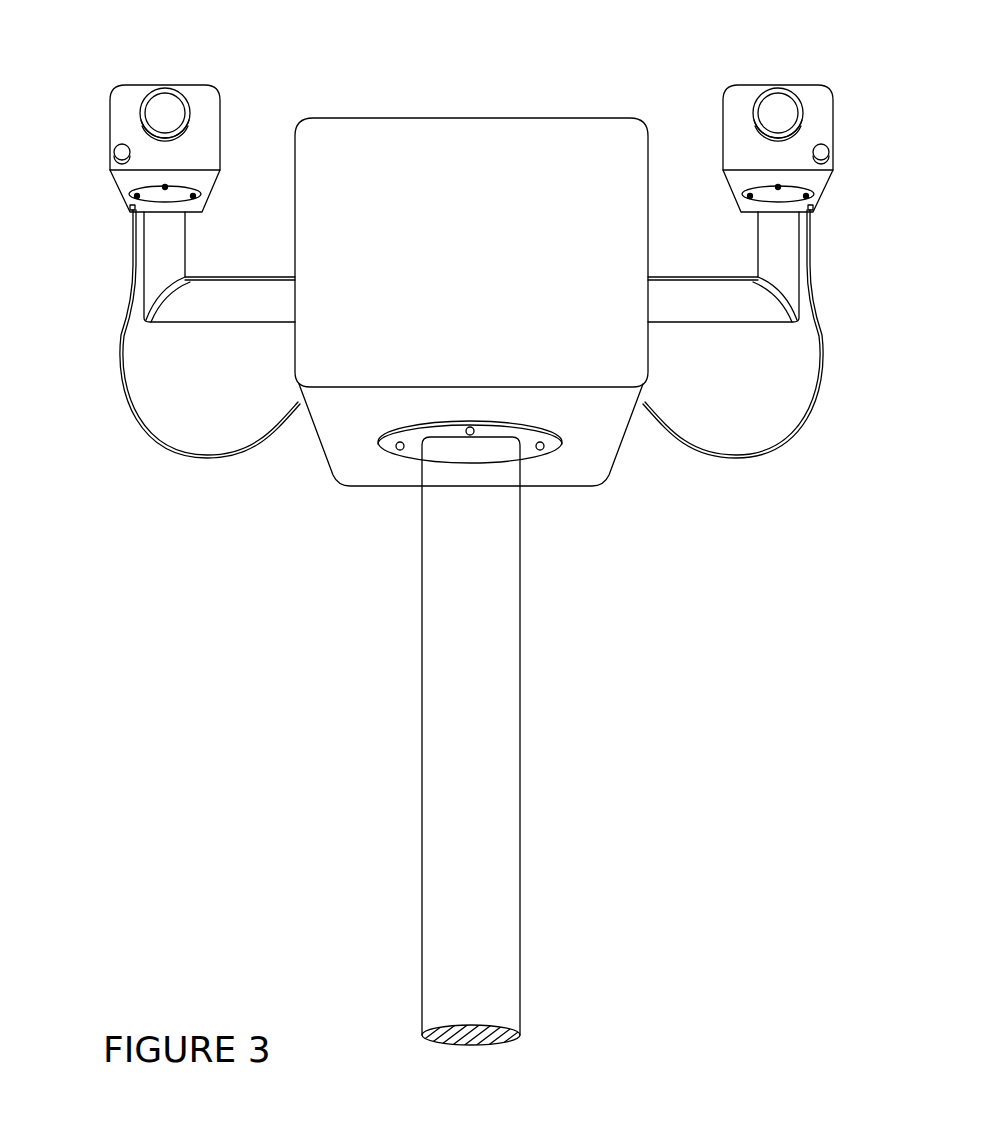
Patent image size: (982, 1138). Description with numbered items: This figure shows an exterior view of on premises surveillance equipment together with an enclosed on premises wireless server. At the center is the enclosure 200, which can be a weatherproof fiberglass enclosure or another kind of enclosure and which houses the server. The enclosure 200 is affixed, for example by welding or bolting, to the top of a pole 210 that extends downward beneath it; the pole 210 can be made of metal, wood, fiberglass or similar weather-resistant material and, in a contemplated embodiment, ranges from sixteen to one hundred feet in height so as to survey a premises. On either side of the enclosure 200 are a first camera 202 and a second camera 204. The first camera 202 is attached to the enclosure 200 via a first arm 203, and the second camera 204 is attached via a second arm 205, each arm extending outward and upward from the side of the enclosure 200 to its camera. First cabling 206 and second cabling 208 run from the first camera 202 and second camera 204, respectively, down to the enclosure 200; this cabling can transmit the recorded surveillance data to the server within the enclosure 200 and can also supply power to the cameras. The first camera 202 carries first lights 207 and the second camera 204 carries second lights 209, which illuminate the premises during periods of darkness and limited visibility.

The enclosure 200 is at (460, 157).
The first camera 202 is at (164, 111).
The first arm 203 is at (208, 298).
The second camera 204 is at (777, 111).
The second arm 205 is at (740, 298).
The first cabling 206 is at (207, 461).
The first lights 207 is at (118, 149).
The second cabling 208 is at (737, 461).
The second lights 209 is at (825, 148).
The pole 210 is at (507, 782).